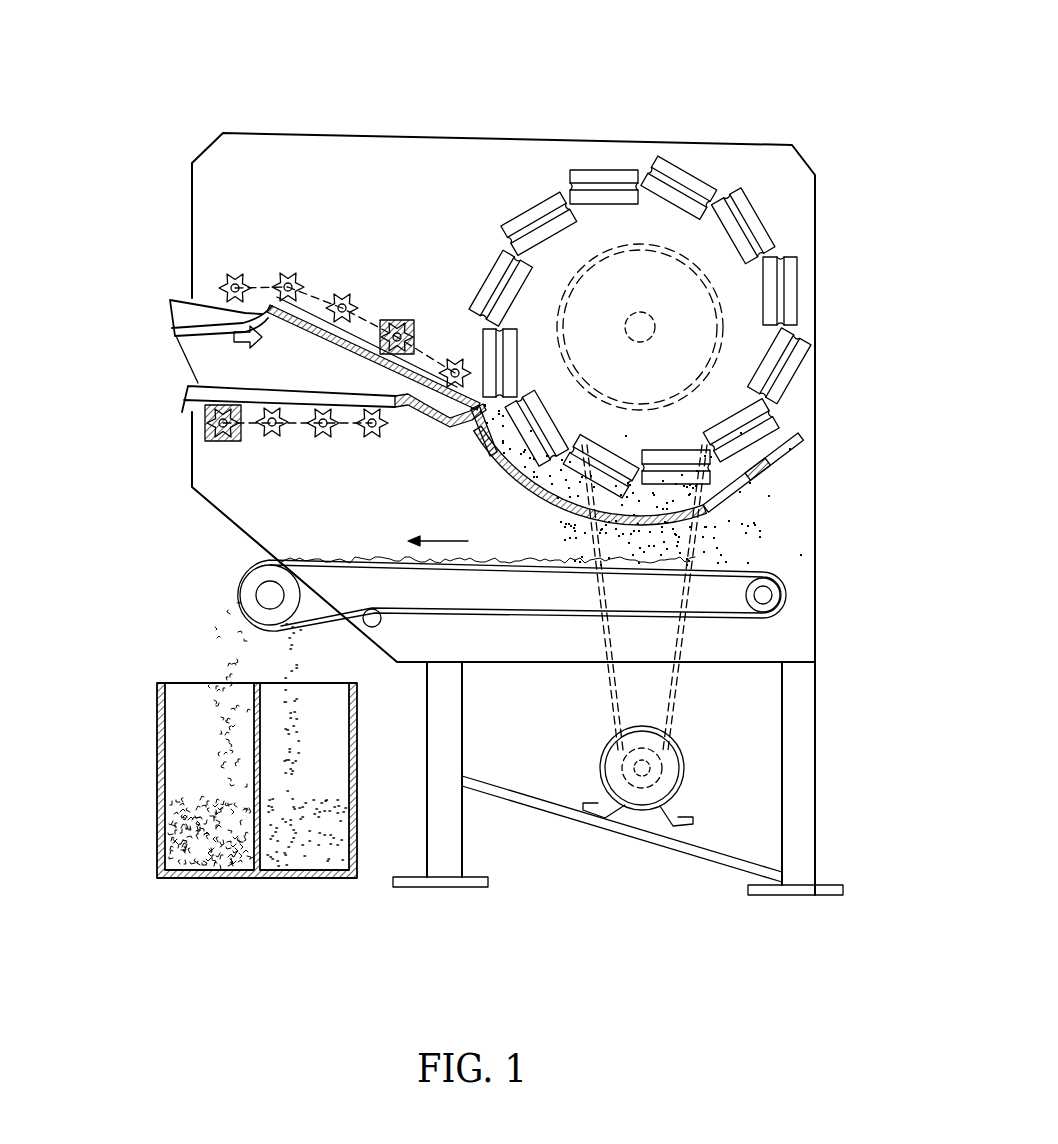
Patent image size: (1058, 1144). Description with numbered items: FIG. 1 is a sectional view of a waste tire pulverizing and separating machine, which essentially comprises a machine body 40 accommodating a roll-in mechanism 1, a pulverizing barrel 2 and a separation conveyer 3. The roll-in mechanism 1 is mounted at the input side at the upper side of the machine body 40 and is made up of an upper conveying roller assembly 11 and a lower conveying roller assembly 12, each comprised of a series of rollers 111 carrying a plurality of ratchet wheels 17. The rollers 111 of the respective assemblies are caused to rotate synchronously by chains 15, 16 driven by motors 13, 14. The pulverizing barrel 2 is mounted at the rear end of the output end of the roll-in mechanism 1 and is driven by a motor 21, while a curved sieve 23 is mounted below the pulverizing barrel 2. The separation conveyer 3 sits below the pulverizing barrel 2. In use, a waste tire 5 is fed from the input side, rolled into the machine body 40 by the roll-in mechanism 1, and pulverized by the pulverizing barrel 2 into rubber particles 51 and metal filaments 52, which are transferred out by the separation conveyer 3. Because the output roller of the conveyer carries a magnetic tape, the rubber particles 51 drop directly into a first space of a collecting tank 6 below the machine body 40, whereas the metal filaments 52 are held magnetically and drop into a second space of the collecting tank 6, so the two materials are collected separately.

The roll-in mechanism 1 is at (88, 354).
The upper conveying roller assembly 11 is at (243, 264).
The waste tire 5 is at (260, 268).
The rollers 111 is at (303, 282).
The ratchet wheels 17 is at (347, 303).
The chain 15 is at (370, 320).
The motor 13 is at (435, 335).
The lower conveying roller assembly 12 is at (200, 382).
The motor 14 is at (205, 440).
The chain 16 is at (247, 443).
The machine body 40 is at (798, 198).
The pulverizing barrel 2 is at (758, 307).
The curved sieve 23 is at (800, 442).
The separation conveyer 3 is at (777, 558).
The motor 21 is at (675, 778).
The collecting tank 6 is at (213, 878).
The rubber particles 51 is at (160, 836).
The metal filaments 52 is at (320, 878).